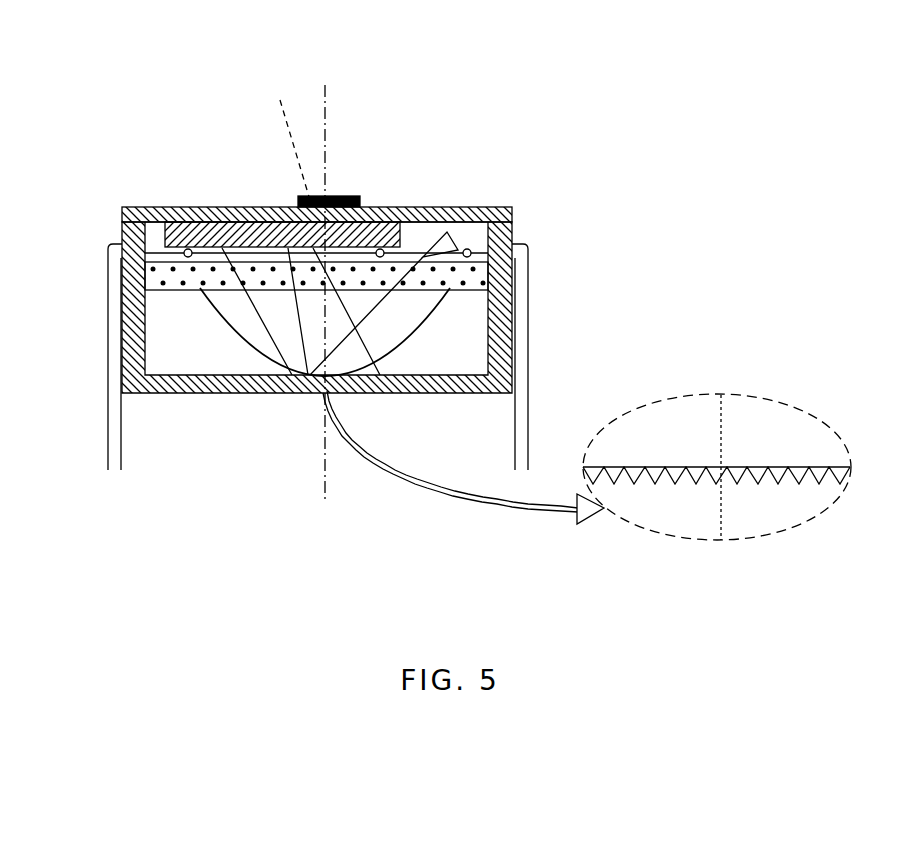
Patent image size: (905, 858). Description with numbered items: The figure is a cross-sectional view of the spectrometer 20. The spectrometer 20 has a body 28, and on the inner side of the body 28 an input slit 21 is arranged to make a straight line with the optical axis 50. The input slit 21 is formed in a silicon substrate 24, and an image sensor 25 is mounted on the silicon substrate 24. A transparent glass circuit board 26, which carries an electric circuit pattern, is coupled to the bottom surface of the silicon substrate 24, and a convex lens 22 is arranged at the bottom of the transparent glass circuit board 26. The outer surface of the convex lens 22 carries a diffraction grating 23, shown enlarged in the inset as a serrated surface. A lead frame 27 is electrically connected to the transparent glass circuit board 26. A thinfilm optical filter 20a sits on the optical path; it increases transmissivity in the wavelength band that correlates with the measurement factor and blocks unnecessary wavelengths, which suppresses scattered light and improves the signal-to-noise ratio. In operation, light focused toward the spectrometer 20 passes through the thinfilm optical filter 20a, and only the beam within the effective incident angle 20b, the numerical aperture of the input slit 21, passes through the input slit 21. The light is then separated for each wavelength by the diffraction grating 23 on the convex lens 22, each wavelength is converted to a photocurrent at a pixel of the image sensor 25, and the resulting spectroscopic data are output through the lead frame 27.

The spectrometer 20 is at (114, 197).
The thinfilm optical filter 20a is at (338, 198).
The effective incident angle 20b is at (303, 118).
The input slit 21 is at (302, 206).
The convex lens 22 is at (235, 328).
The diffraction grating 23 is at (345, 376).
The silicon substrate 24 is at (432, 205).
The image sensor 25 is at (205, 222).
The transparent glass circuit board 26 is at (517, 287).
The lead frame 27 is at (108, 432).
The body 28 is at (517, 225).
The optical axis 50 is at (327, 118).